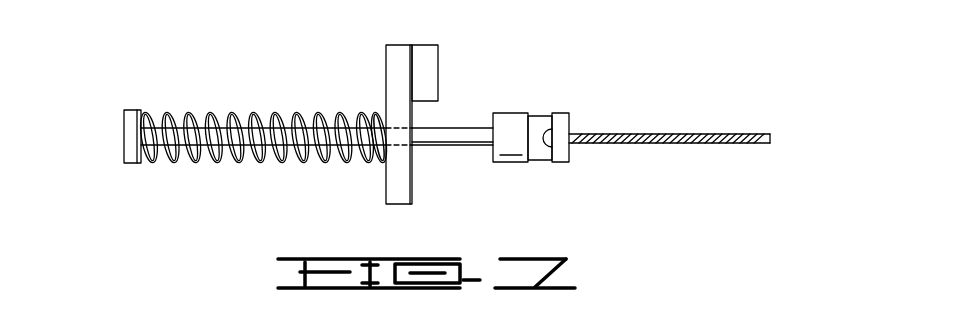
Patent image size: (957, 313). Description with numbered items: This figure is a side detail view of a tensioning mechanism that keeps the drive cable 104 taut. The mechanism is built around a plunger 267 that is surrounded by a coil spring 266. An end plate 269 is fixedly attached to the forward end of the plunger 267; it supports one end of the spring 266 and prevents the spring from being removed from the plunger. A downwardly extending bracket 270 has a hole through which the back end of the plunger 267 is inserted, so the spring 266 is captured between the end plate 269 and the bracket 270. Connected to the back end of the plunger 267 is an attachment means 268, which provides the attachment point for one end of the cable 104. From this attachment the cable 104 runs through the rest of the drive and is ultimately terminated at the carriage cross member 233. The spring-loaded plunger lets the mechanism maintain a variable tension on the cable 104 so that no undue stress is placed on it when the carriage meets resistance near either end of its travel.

The cable 104 is at (697, 143).
The carriage cross member 233 is at (438, 62).
The coil spring 266 is at (222, 111).
The plunger 267 is at (457, 146).
The attachment means 268 is at (561, 113).
The end plate 269 is at (123, 130).
The bracket 270 is at (397, 205).